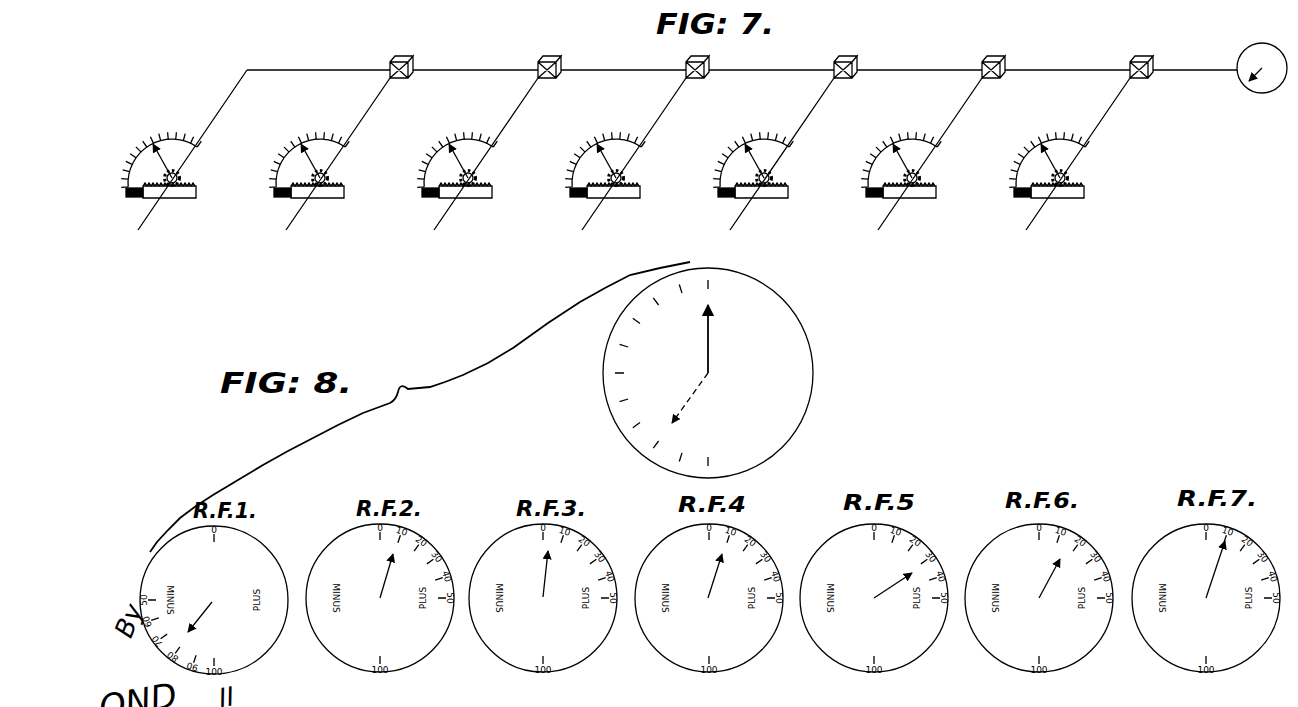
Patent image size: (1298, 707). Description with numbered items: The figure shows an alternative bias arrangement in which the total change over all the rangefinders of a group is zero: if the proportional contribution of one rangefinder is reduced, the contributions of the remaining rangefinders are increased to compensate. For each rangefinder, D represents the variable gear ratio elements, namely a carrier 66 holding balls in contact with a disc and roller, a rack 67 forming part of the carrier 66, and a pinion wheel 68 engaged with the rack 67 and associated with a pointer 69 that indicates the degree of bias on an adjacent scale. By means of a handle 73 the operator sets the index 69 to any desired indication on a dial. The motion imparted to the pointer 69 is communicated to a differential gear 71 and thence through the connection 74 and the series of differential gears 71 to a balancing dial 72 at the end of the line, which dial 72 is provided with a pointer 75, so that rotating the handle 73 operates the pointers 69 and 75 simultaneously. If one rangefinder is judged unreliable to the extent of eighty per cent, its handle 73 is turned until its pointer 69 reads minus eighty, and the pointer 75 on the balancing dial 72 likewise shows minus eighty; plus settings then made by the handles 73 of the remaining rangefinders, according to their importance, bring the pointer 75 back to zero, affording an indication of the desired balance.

In FIG. 7, the carrier 66 is at (997, 229).
In FIG. 7, the rack 67 is at (1084, 192).
In FIG. 7, the pinion wheel 68 is at (1068, 176).
In FIG. 7, the pointer 69 is at (1081, 146).
In FIG. 8, the pointer 69 is at (1215, 573).
In FIG. 7, the differential gear 71 is at (774, 51).
In FIG. 7, the balancing dial 72 is at (1270, 60).
In FIG. 8, the balancing dial 72 is at (782, 297).
In FIG. 7, the handle 73 is at (1053, 255).
In FIG. 7, the connection 74 is at (303, 69).
In FIG. 7, the pointer 75 is at (1256, 85).
In FIG. 8, the pointer 75 is at (708, 344).
In FIG. 7, the variable gear ratio elements D is at (1089, 228).